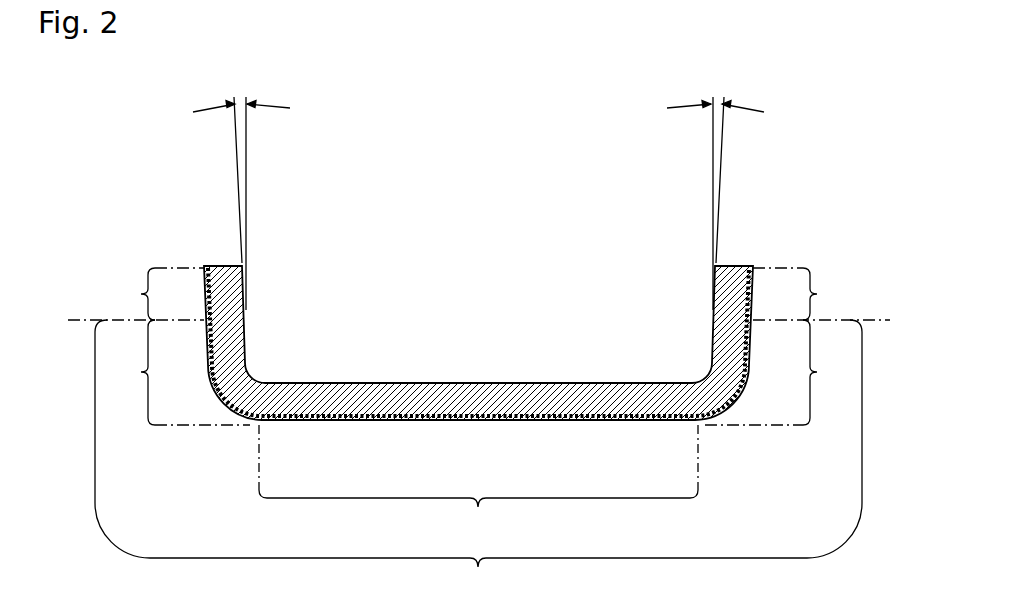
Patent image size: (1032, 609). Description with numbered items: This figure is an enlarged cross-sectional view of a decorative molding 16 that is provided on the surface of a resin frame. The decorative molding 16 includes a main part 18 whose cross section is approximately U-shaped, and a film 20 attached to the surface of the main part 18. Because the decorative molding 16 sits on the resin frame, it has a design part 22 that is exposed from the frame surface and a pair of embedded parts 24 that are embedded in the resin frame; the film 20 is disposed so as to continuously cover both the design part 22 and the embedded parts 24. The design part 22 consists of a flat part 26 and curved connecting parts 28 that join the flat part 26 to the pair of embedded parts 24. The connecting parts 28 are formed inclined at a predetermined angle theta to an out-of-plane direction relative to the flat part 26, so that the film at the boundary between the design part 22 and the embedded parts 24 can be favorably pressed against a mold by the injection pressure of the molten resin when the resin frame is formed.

The decorative molding 16 is at (563, 245).
The main part 18 is at (478, 392).
The film 20 is at (477, 425).
The design part 22 is at (479, 459).
The embedded part 24 is at (479, 294).
The flat part 26 is at (478, 482).
The connecting part 28 is at (479, 372).